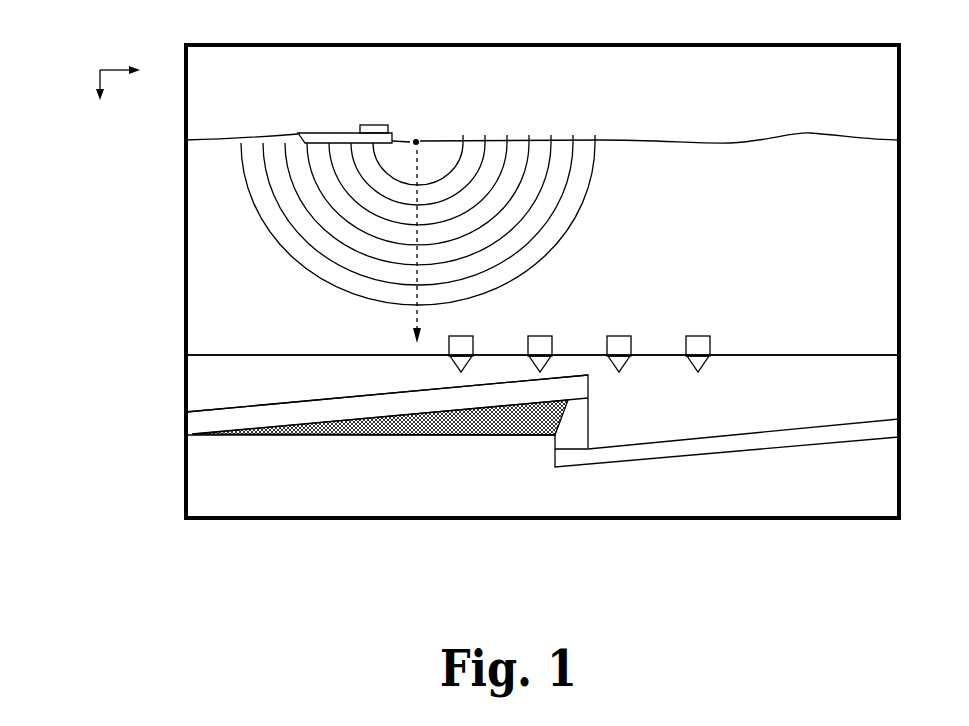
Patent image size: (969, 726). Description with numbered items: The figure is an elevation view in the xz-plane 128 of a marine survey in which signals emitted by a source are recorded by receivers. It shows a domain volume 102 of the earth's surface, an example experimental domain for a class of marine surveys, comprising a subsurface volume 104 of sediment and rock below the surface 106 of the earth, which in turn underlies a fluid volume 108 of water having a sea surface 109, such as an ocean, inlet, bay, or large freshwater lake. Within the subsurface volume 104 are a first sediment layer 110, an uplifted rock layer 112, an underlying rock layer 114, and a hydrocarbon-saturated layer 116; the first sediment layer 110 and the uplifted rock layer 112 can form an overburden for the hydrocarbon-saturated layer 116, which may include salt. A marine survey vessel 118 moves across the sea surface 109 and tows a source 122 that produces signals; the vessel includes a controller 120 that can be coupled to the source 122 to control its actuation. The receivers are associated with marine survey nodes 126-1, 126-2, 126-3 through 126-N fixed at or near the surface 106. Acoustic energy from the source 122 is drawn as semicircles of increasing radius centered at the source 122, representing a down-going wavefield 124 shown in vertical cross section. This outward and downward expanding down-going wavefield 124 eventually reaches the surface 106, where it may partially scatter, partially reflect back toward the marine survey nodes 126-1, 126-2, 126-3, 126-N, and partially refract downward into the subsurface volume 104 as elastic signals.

The domain volume 102 is at (116, 190).
The subsurface volume 104 is at (207, 378).
The surface 106 is at (236, 355).
The fluid volume 108 is at (207, 273).
The sea surface 109 is at (660, 140).
The first sediment layer 110 is at (782, 404).
The uplifted rock layer 112 is at (200, 425).
The underlying rock layer 114 is at (295, 510).
The hydrocarbon-saturated layer 116 is at (383, 436).
The marine survey vessel 118 is at (330, 133).
The controller 120 is at (375, 125).
The source 122 is at (416, 139).
The down-going wavefield 124 is at (565, 233).
The marine survey node 126-1 is at (463, 336).
The marine survey node 126-2 is at (542, 336).
The marine survey node 126-3 is at (621, 336).
The marine survey node 126-N is at (700, 336).
The xz-plane 128 is at (100, 70).